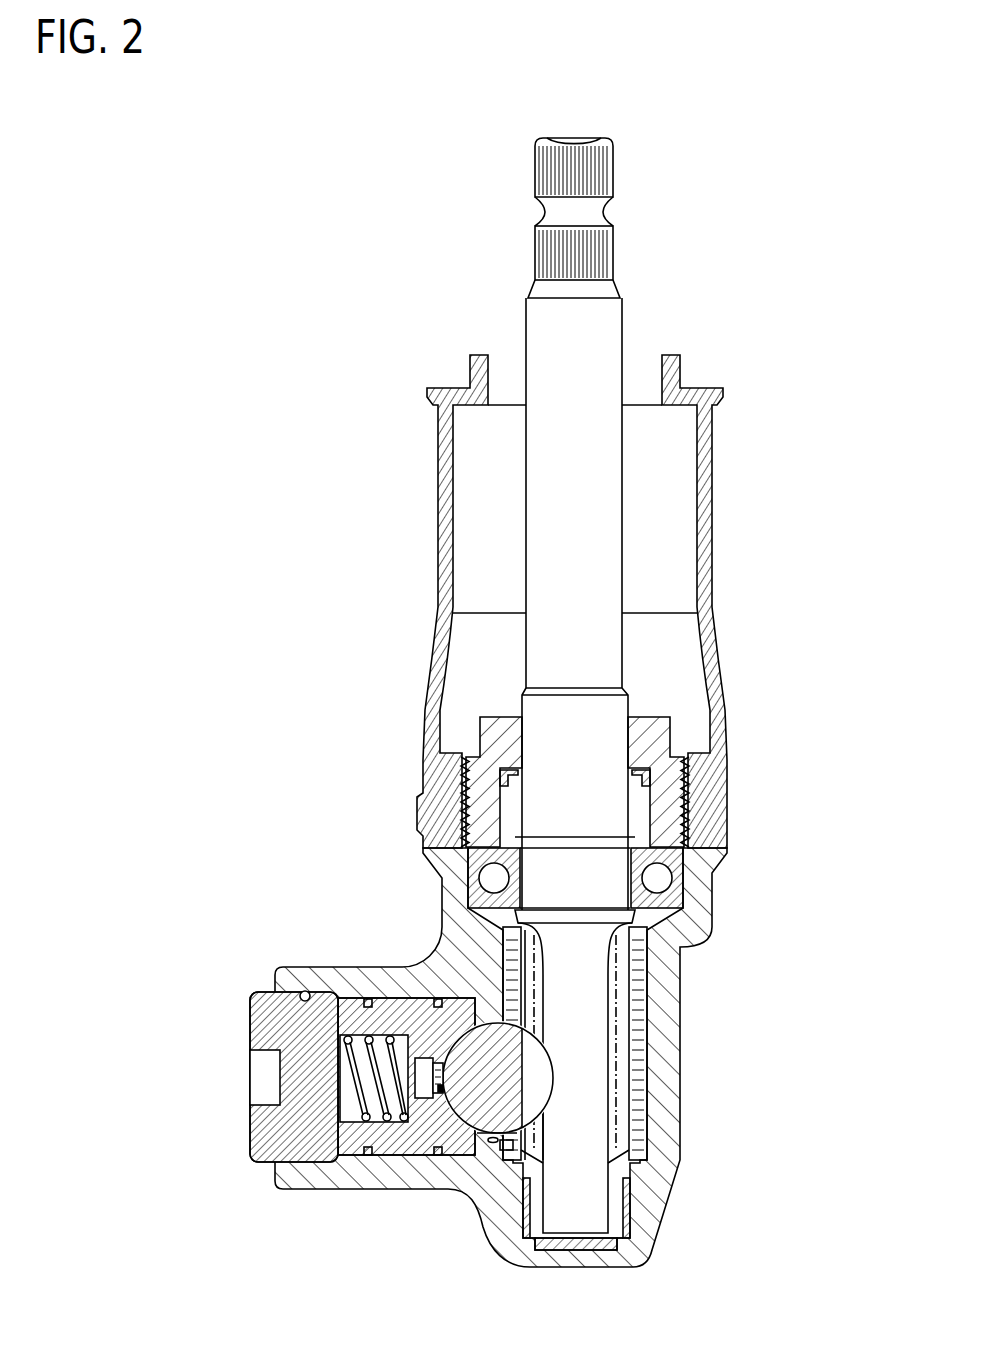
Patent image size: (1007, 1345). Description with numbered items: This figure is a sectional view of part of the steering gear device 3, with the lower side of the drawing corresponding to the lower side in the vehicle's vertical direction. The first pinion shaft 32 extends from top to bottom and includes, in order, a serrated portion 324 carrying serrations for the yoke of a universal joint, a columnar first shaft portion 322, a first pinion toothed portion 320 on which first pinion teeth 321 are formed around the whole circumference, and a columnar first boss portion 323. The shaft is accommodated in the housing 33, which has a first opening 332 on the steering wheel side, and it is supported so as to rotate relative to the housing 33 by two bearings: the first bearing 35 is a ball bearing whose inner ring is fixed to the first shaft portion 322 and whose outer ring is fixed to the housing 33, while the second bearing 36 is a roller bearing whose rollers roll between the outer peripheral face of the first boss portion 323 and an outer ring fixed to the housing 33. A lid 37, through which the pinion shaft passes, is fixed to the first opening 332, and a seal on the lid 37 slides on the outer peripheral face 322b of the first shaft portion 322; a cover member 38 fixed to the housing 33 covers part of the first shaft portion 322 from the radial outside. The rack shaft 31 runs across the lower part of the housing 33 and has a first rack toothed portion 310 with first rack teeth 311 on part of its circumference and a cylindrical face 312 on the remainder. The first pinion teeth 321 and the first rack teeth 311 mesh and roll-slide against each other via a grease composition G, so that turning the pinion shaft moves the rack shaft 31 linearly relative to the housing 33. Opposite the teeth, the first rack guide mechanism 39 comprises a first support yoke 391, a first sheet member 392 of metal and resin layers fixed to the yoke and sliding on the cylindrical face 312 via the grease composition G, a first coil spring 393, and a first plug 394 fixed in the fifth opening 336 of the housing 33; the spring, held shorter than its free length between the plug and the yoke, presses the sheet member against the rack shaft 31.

The steering gear device 3 is at (728, 212).
The rack shaft 31 is at (472, 1043).
The first pinion shaft 32 is at (628, 530).
The housing 33 is at (712, 917).
The first bearing 35 is at (672, 890).
The second bearing 36 is at (625, 1205).
The lid 37 is at (637, 772).
The cover member 38 is at (438, 657).
The first rack guide mechanism 39 is at (367, 1076).
The first rack toothed portion 310 is at (549, 1113).
The first rack teeth 311 is at (533, 1092).
The cylindrical face 312 is at (443, 1088).
The first pinion toothed portion 320 is at (538, 1057).
The first pinion teeth 321 is at (622, 1060).
The first shaft portion 322 is at (605, 466).
The outer peripheral face 322b is at (628, 716).
The first boss portion 323 is at (640, 1095).
The serrated portion 324 is at (612, 242).
The first opening 332 is at (688, 786).
The fifth opening 336 is at (299, 996).
The first support yoke 391 is at (383, 1150).
The first sheet member 392 is at (423, 1142).
The first coil spring 393 is at (345, 1098).
The first plug 394 is at (267, 1022).
The grease composition G is at (512, 978).